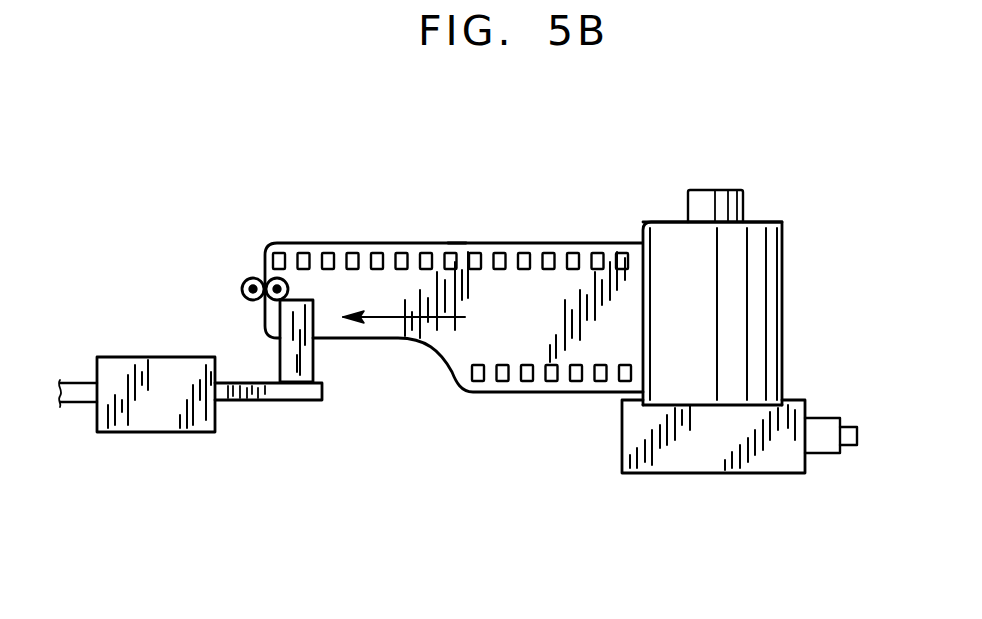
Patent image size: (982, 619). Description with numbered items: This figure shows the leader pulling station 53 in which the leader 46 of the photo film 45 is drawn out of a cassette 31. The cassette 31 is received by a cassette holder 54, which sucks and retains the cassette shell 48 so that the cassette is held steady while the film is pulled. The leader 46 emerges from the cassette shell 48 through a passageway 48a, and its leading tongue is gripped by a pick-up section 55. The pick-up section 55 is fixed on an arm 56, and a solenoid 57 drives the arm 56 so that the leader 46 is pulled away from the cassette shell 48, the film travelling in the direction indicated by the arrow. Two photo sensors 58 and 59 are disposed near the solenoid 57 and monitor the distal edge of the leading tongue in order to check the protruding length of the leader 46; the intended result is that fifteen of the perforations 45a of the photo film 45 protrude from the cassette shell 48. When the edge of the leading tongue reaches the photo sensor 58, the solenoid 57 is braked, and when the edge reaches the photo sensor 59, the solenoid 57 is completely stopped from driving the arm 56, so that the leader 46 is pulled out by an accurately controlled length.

The leader pulling station 53 is at (393, 152).
The photo film 45 is at (508, 420).
The perforations 45a is at (457, 243).
The leader 46 is at (547, 243).
The passageway 48a is at (643, 292).
The cassette shell 48 is at (770, 308).
The cassette 31 is at (766, 193).
The cassette holder 54 is at (725, 474).
The pick-up section 55 is at (315, 365).
The arm 56 is at (257, 401).
The solenoid 57 is at (155, 433).
The photo sensor 58 is at (287, 278).
The photo sensor 59 is at (251, 278).